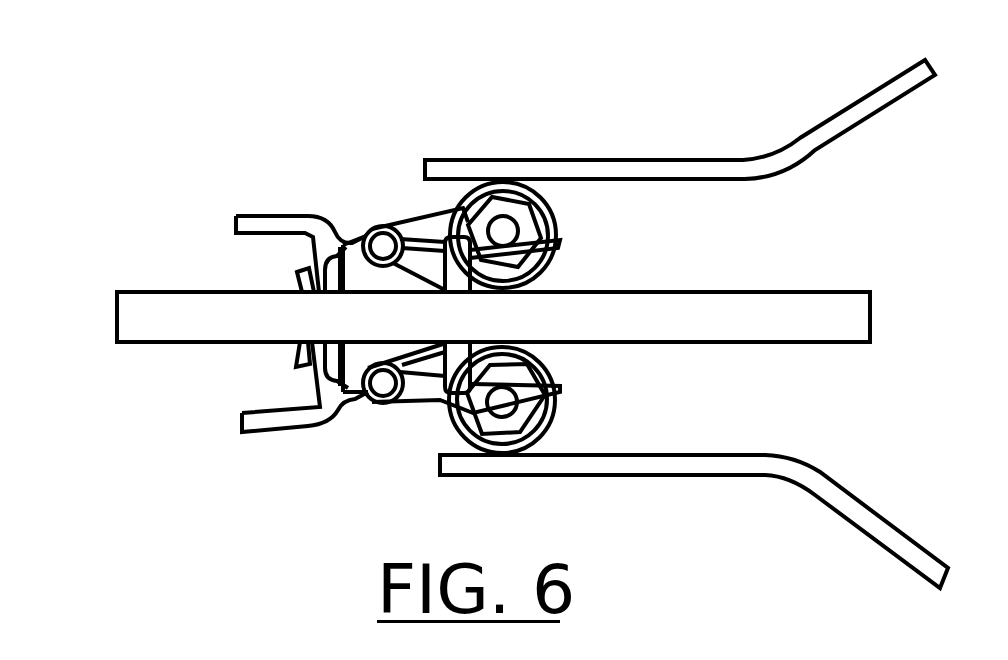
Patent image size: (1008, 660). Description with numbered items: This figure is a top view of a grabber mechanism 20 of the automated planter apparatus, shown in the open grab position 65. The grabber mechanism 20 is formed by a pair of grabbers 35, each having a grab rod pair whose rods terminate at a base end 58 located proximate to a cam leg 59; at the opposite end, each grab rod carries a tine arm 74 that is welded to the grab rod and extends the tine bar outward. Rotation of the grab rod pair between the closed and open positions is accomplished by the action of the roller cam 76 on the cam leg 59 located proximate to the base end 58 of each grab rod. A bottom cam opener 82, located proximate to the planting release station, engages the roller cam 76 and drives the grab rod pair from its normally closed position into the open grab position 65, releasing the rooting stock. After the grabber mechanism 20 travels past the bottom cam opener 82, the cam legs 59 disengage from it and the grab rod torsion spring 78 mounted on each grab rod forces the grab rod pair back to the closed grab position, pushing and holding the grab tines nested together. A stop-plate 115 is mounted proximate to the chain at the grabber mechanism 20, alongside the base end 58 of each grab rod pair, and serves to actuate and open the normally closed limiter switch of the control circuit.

The grabber mechanism 20 is at (577, 65).
The pair of grabbers 35 is at (112, 267).
The base end 58 is at (385, 244).
The cam leg 59 is at (422, 233).
The open grab position 65 is at (153, 230).
The tine arm 74 is at (240, 220).
The roller cam 76 is at (551, 214).
The grab rod torsion spring 78 is at (369, 233).
The bottom cam opener 82 is at (717, 168).
The stop-plate 115 is at (160, 305).